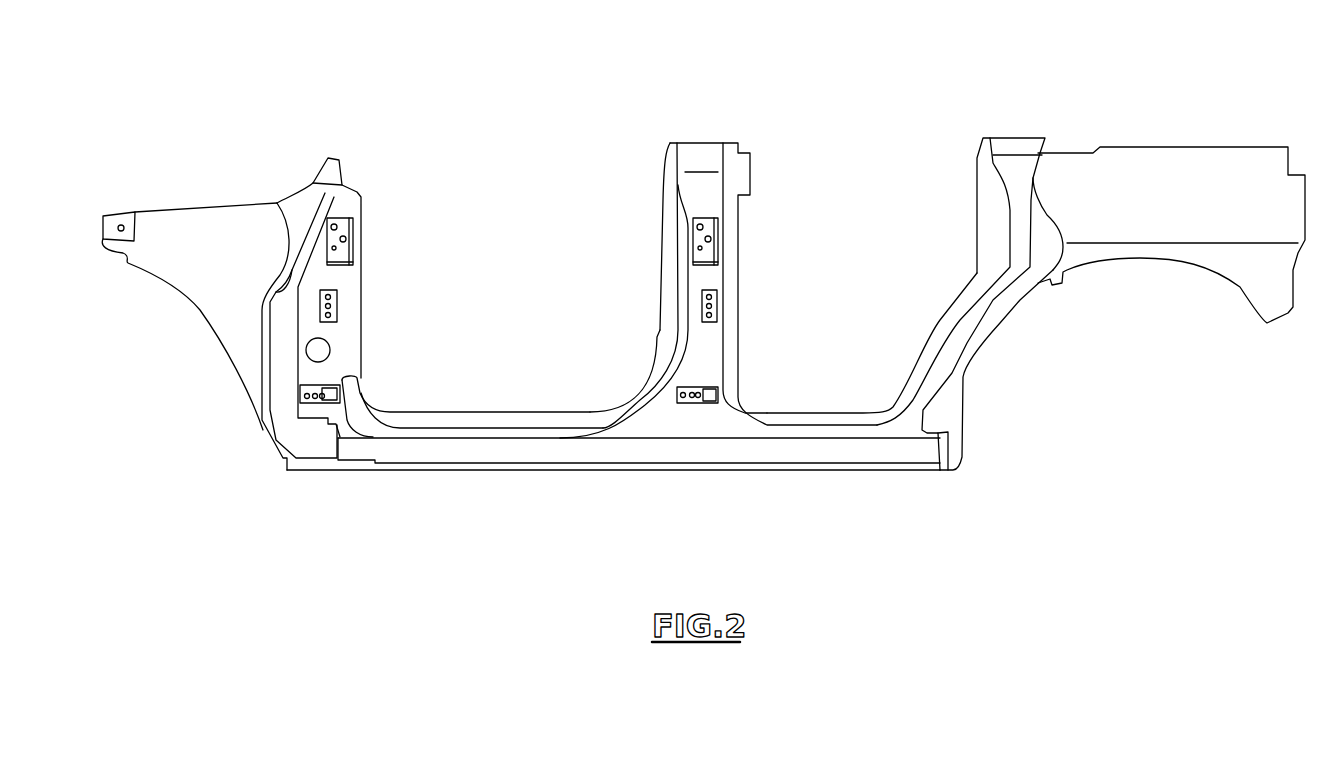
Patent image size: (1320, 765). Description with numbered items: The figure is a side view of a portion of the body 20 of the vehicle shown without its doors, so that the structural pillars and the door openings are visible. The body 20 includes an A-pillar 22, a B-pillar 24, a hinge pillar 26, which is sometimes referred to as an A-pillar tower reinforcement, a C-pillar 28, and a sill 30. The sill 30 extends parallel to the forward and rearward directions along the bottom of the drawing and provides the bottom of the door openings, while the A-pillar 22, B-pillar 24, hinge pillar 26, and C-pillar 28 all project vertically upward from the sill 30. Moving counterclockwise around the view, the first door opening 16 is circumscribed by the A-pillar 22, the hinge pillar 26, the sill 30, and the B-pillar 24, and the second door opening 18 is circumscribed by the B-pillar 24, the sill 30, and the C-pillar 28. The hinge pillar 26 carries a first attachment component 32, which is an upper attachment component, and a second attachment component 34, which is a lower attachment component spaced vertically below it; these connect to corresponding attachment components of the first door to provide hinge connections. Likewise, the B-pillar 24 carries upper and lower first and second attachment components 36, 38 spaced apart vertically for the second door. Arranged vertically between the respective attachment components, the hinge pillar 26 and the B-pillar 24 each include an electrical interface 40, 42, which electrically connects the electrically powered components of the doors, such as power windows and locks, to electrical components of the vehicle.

The first door opening 16 is at (512, 322).
The second door opening 18 is at (890, 289).
The body 20 is at (287, 178).
The A-pillar 22 is at (342, 133).
The B-pillar 24 is at (703, 160).
The hinge pillar 26 is at (306, 338).
The C-pillar 28 is at (990, 228).
The sill 30 is at (614, 450).
The first attachment component 32 is at (357, 240).
The second attachment component 34 is at (361, 393).
The first attachment component 36 is at (735, 228).
The second attachment component 38 is at (745, 372).
The electrical interface 40 is at (337, 303).
The electrical interface 42 is at (717, 305).